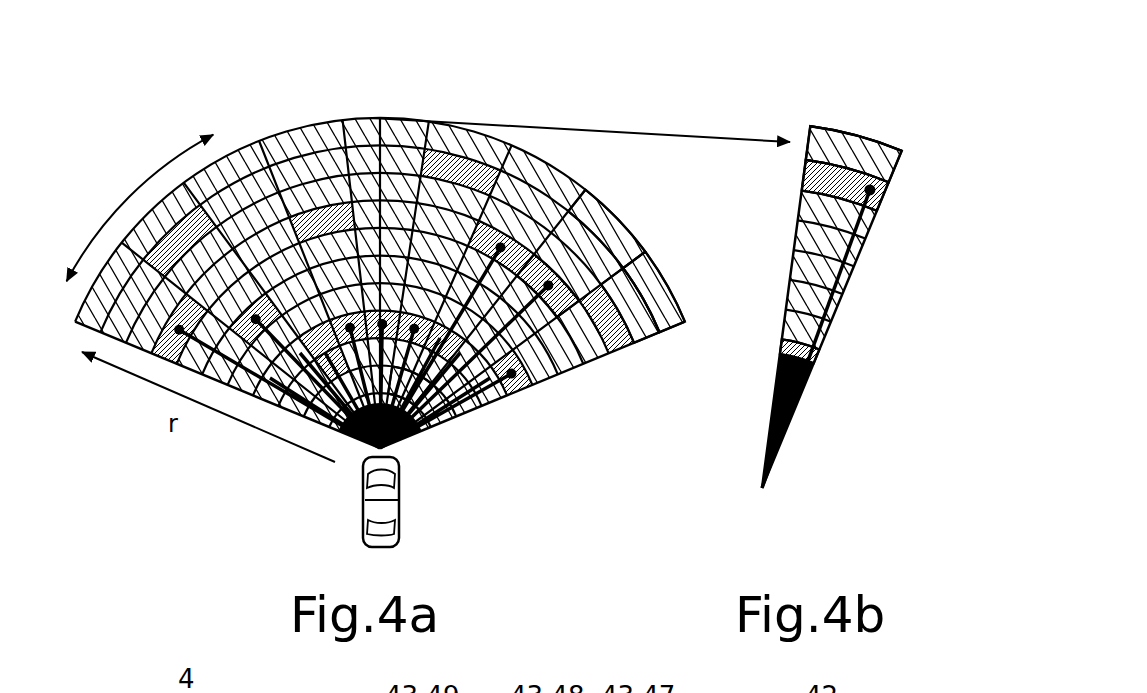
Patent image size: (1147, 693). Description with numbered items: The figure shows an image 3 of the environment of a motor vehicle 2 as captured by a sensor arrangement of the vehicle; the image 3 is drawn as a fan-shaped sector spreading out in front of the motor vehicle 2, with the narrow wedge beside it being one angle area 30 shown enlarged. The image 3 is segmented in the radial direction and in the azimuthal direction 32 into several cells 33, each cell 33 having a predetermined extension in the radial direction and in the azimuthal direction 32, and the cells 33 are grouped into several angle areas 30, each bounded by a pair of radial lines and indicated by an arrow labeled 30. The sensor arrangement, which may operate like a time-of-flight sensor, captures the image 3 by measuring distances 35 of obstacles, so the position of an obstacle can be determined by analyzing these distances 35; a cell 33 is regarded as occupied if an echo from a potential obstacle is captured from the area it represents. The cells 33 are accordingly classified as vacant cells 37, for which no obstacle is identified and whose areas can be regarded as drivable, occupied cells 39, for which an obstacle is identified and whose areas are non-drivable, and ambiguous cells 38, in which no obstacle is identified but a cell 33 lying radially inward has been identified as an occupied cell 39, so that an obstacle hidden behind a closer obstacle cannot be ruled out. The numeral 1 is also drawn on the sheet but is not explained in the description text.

In FIG. 4a, the detection area of radar sensor 1 is at (227, 405).
In FIG. 4a, the motor vehicle 2 is at (330, 511).
In FIG. 4a, the image 3 is at (357, 238).
In FIG. 4a, the angle area 30 is at (678, 249).
In FIG. 4b, the angle area 30 is at (832, 268).
In FIG. 4a, the azimuthal direction 32 is at (140, 170).
In FIG. 4a, the cell 33 is at (606, 301).
In FIG. 4a, the distance 35 is at (374, 360).
In FIG. 4b, the distance 35 is at (830, 336).
In FIG. 4a, the vacant cell 37 is at (452, 439).
In FIG. 4b, the vacant cell 37 is at (828, 413).
In FIG. 4a, the ambiguous cell 38 is at (592, 350).
In FIG. 4b, the ambiguous cell 38 is at (878, 212).
In FIG. 4a, the occupied cell 39 is at (690, 337).
In FIG. 4b, the occupied cell 39 is at (887, 215).